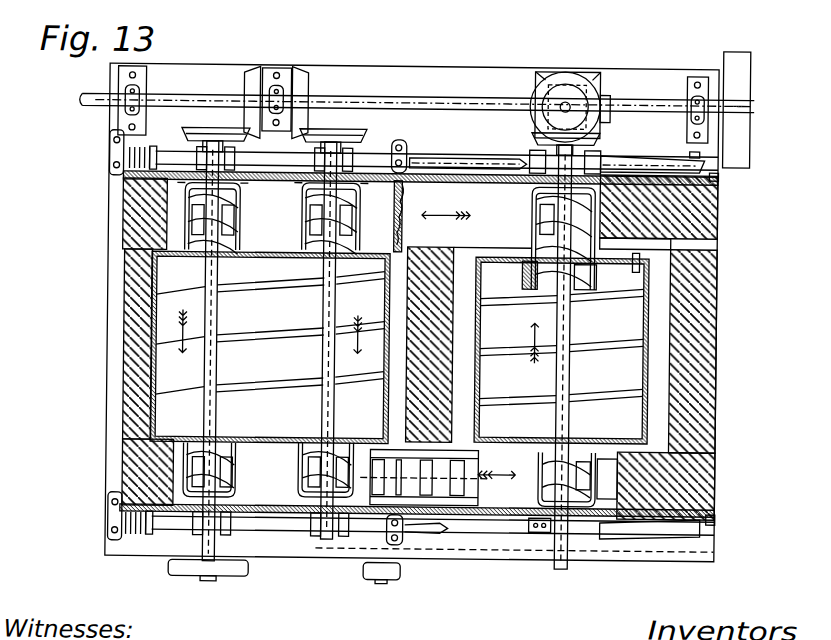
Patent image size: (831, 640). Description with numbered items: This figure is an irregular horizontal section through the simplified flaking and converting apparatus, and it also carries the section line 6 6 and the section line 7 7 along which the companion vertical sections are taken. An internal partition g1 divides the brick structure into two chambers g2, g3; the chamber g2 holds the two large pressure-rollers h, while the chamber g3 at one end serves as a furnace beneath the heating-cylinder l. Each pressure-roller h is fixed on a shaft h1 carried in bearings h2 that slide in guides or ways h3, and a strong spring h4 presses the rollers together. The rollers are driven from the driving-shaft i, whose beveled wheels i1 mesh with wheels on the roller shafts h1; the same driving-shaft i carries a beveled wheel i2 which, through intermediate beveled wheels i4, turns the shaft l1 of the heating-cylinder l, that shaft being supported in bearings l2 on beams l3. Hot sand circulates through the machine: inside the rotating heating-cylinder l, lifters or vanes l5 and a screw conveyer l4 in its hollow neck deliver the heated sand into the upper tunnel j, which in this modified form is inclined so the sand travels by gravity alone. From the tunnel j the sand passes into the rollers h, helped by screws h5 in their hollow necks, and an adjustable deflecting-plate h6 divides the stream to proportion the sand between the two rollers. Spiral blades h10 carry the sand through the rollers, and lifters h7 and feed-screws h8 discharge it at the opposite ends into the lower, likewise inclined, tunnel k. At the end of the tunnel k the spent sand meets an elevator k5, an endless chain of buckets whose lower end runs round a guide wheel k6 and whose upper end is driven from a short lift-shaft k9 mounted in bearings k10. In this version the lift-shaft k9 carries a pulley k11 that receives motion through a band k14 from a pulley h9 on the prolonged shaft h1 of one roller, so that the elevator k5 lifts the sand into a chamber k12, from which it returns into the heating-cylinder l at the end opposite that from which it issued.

The driving-shaft i is at (144, 103).
The beveled wheel i1 is at (293, 197).
The beveled wheel i2 is at (605, 103).
The intermediate beveled wheel i4 is at (581, 81).
The pressure-roller h is at (156, 330).
The shaft h1 is at (209, 357).
The bearing h2 is at (220, 150).
The guide or way h3 is at (163, 158).
The spring h4 is at (126, 160).
The screw h5 is at (402, 177).
The adjustable deflecting-plate h6 is at (229, 264).
The lifter h7 is at (189, 414).
The feed-screw h8 is at (216, 449).
The pulley h9 is at (235, 532).
The spiral blade h10 is at (206, 380).
The internal partition g1 is at (445, 449).
The chamber g2 is at (562, 530).
The chamber g3 is at (142, 349).
The upper tunnel j is at (490, 156).
The lower tunnel k is at (499, 449).
The elevator k5 is at (467, 427).
The supporting or guide wheel k6 is at (407, 502).
The lift-shaft k9 is at (383, 580).
The bearing k10 is at (400, 449).
The pulley k11 is at (389, 449).
The chamber k12 is at (612, 464).
The band k14 is at (347, 512).
The heating-cylinder l is at (640, 280).
The shaft l1 is at (622, 378).
The bearing l2 is at (589, 158).
The beam l3 is at (454, 190).
The screw conveyer l4 is at (598, 248).
The lifter or vane l5 is at (565, 315).
The section line 6 is at (730, 214).
The section line 7 is at (715, 479).